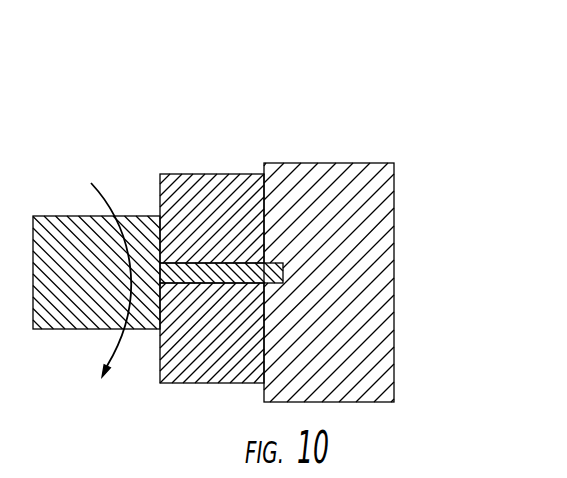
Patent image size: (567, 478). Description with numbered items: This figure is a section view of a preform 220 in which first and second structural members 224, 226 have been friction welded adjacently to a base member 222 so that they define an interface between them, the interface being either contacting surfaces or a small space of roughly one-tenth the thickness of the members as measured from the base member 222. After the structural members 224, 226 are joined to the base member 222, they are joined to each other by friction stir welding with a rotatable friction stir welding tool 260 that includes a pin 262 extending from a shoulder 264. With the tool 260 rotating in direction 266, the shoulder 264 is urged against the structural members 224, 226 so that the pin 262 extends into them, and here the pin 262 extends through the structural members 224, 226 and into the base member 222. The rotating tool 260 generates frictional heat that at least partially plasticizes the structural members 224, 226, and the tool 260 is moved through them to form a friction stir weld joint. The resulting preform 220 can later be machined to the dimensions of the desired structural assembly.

The preform 220 is at (343, 89).
The base member 222 is at (373, 168).
The first structural member 224 is at (256, 227).
The second structural member 226 is at (255, 342).
The friction stir welding tool 260 is at (73, 172).
The pin 262 is at (202, 263).
The shoulder 264 is at (163, 227).
The direction 266 is at (123, 348).